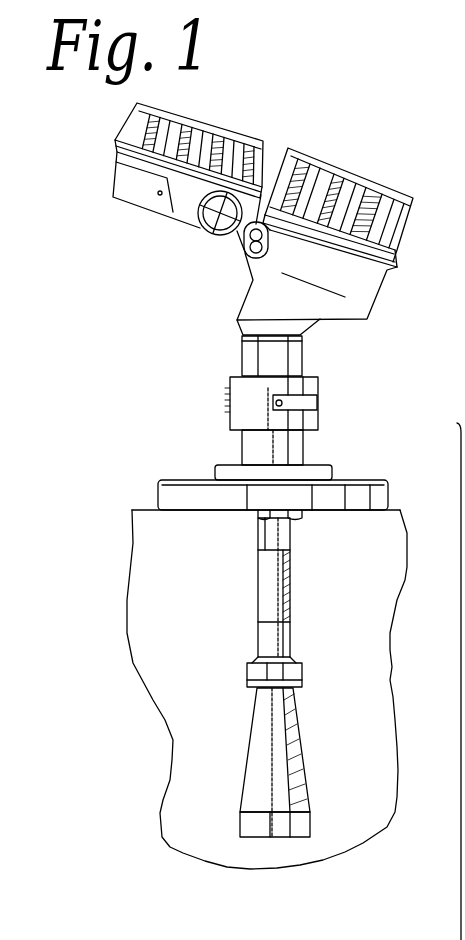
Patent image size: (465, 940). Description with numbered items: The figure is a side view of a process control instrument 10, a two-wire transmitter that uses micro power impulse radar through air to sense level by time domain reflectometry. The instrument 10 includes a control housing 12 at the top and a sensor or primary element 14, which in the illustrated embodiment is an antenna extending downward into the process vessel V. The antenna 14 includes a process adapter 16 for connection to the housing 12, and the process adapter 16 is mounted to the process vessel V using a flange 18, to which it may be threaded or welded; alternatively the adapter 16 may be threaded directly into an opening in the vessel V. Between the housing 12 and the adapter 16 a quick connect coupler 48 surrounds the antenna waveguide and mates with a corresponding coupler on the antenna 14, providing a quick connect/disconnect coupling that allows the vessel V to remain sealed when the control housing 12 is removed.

The process control instrument 10 is at (420, 167).
The control housing 12 is at (395, 288).
The quick connect coupler 48 is at (305, 355).
The process adapter 16 is at (313, 445).
The flange 18 is at (388, 500).
The primary element 14 is at (253, 598).
The process vessel V is at (150, 540).